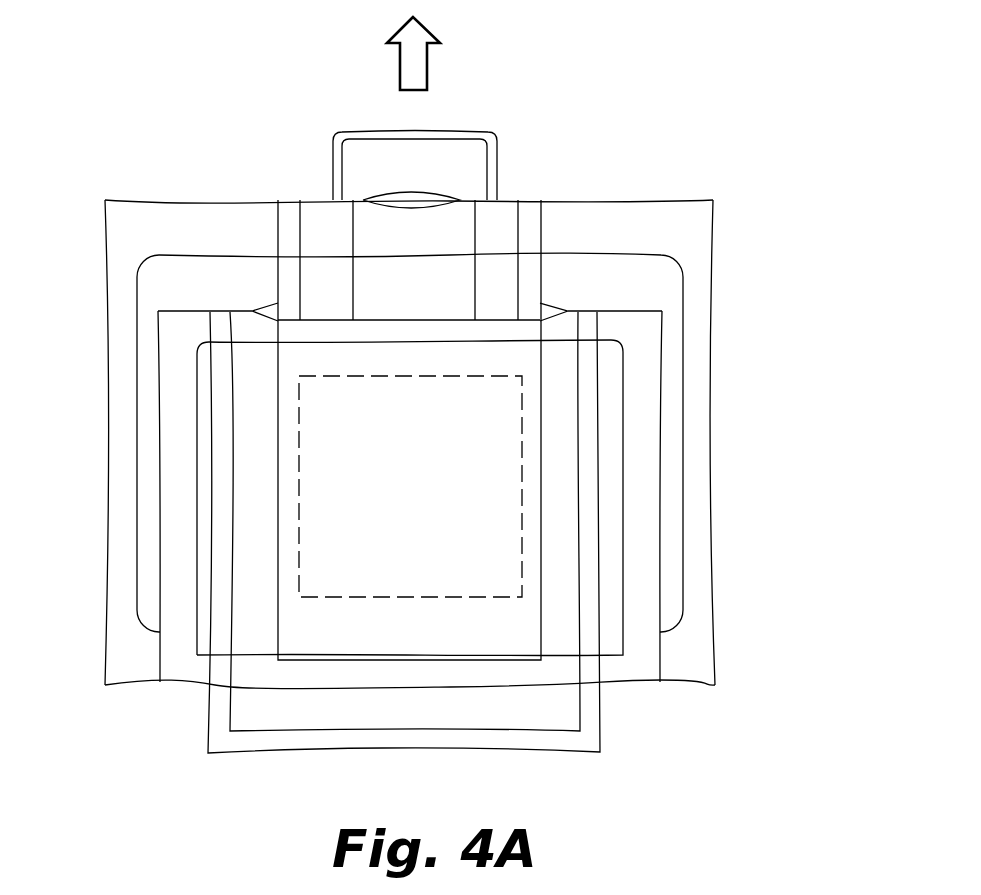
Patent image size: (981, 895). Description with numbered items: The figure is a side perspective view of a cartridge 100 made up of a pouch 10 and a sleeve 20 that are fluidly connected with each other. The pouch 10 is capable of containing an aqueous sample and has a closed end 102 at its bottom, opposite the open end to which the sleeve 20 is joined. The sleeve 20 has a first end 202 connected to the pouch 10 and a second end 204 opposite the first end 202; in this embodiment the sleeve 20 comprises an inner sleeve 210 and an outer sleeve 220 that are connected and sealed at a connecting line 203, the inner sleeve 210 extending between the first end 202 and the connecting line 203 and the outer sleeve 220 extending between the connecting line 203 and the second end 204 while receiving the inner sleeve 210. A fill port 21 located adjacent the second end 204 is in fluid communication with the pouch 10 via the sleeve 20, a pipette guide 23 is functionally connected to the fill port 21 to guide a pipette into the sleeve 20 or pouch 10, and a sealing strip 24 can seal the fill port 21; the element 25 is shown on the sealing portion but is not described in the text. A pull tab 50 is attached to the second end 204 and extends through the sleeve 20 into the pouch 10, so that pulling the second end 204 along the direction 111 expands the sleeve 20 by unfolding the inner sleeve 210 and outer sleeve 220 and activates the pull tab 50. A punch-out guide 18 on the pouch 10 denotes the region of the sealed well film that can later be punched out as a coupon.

The pouch 10 is at (552, 750).
The punch-out guide 18 is at (522, 508).
The sleeve 20 is at (461, 451).
The fill port 21 is at (411, 201).
The pipette guide 23 is at (368, 235).
The sealing strip 24 is at (485, 130).
The cap 25 is at (370, 156).
The pull tab 50 is at (528, 210).
The cartridge 100 is at (638, 60).
The closed end 102 is at (300, 752).
The direction 111 is at (421, 34).
The first end 202 is at (178, 310).
The connecting line 203 is at (687, 682).
The second end 204 is at (137, 202).
The inner sleeve 210 is at (662, 412).
The outer sleeve 220 is at (715, 278).